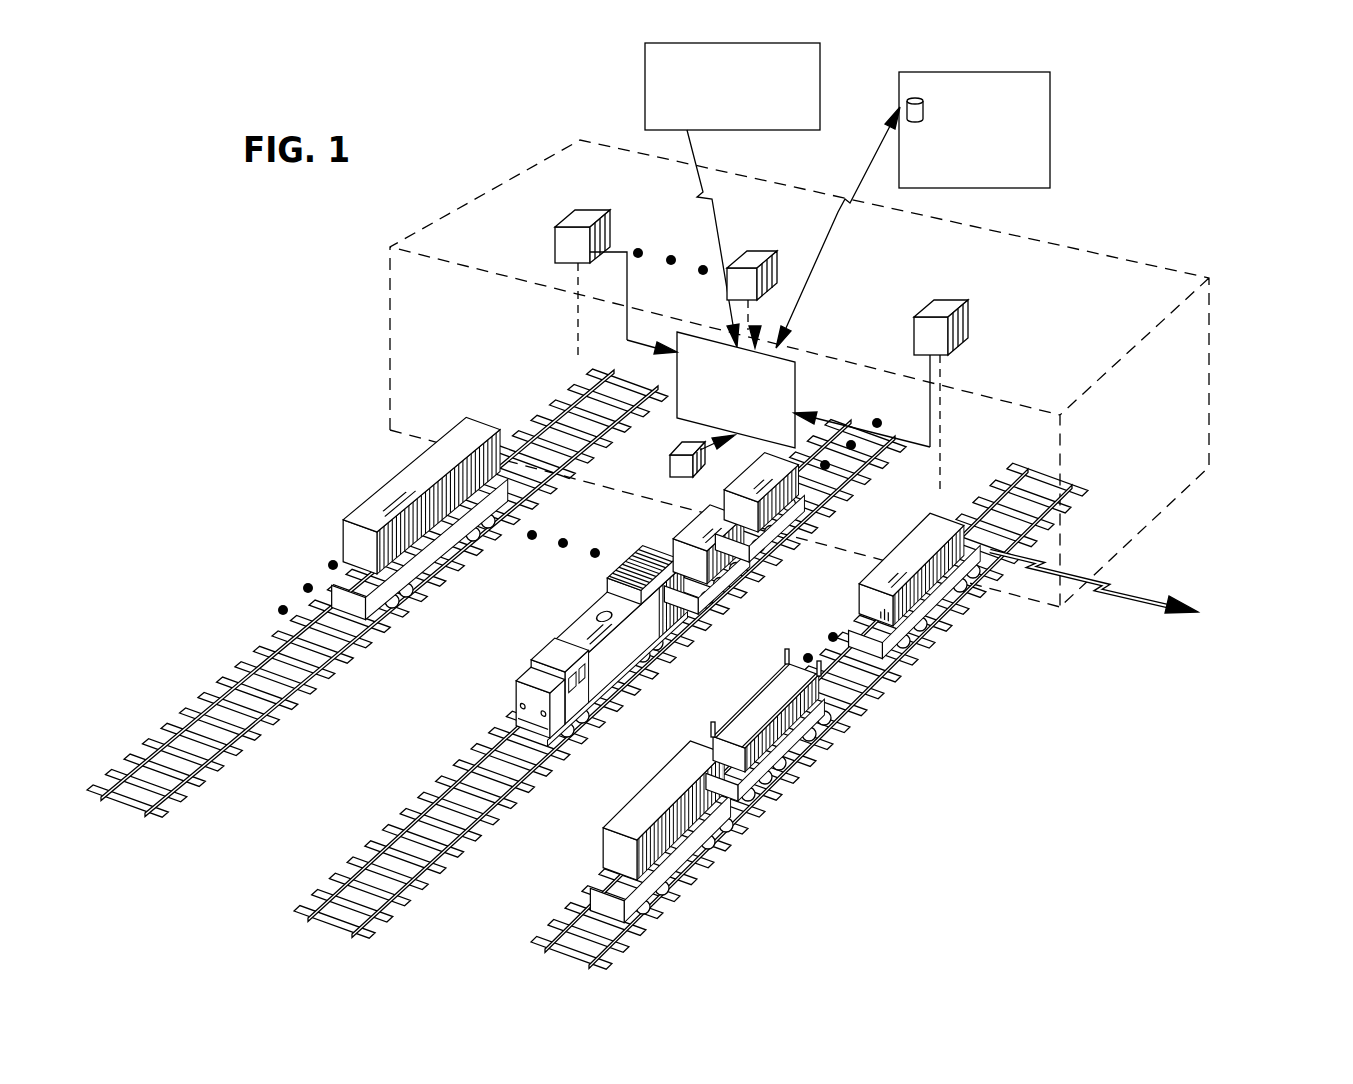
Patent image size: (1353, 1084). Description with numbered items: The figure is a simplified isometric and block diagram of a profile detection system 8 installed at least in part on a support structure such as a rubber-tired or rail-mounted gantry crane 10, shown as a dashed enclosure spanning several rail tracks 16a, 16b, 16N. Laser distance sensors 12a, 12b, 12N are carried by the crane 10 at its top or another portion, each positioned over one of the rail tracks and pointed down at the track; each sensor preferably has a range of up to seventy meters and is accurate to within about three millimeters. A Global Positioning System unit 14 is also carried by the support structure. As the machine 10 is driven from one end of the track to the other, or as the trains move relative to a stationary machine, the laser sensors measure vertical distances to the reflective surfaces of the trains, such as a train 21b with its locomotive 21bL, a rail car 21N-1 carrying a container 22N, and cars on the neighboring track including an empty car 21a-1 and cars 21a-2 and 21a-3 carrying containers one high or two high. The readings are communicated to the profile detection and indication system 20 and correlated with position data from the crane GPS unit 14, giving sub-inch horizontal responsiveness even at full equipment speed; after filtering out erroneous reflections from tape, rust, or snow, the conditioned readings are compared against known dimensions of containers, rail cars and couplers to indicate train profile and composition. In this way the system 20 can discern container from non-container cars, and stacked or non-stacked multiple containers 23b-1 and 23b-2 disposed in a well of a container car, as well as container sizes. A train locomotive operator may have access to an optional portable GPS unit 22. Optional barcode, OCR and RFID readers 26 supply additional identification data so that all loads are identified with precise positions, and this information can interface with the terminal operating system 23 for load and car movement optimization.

The system 8 is at (1245, 366).
The rail-mounted gantry crane 10 is at (1128, 295).
The laser distance sensor 12N is at (565, 212).
The laser distance sensor 12b is at (778, 278).
The laser distance sensor 12a is at (970, 325).
The Global Positioning System unit 14 is at (668, 461).
The rail track 16N is at (377, 632).
The rail track 16b is at (373, 857).
The rail track 16a is at (852, 712).
The profile detection and indication system 20 is at (714, 340).
The rail car 21N-1 is at (430, 565).
The empty car 21a-1 is at (793, 745).
The car with one high or two high containers 21a-2 is at (933, 570).
The car with one high or two high containers 21a-3 is at (700, 837).
The train 21b is at (608, 623).
The locomotive 21bL is at (595, 647).
The portable GPS unit 22 is at (618, 713).
The container 22N is at (447, 533).
The terminal operating system 23 is at (1050, 90).
The container 23b-1 is at (725, 545).
The container 23b-2 is at (775, 498).
The barcode, OCR, and/or RFID reader 26 is at (647, 58).